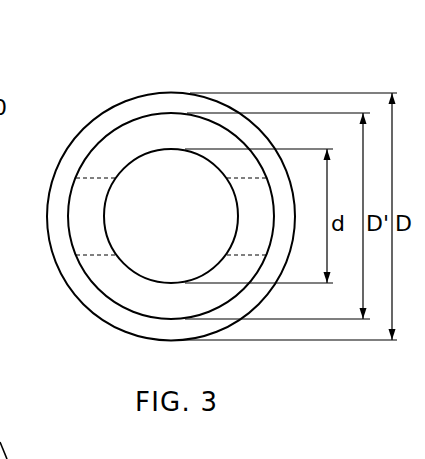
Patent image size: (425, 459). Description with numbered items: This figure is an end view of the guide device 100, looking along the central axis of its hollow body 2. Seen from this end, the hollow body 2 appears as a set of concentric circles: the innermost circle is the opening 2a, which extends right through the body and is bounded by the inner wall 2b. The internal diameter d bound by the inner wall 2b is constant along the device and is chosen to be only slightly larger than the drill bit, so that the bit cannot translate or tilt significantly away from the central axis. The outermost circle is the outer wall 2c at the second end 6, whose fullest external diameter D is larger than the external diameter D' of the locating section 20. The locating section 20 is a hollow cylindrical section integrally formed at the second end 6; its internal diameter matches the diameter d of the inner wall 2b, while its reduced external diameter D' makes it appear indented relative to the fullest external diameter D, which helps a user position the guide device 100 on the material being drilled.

The guide device 100 is at (237, 73).
The hollow body 2 is at (137, 95).
The opening 2a is at (190, 227).
The inner wall 2b is at (102, 227).
The outer wall 2c is at (80, 302).
The second end 6 is at (121, 116).
The locating section 20 is at (152, 298).